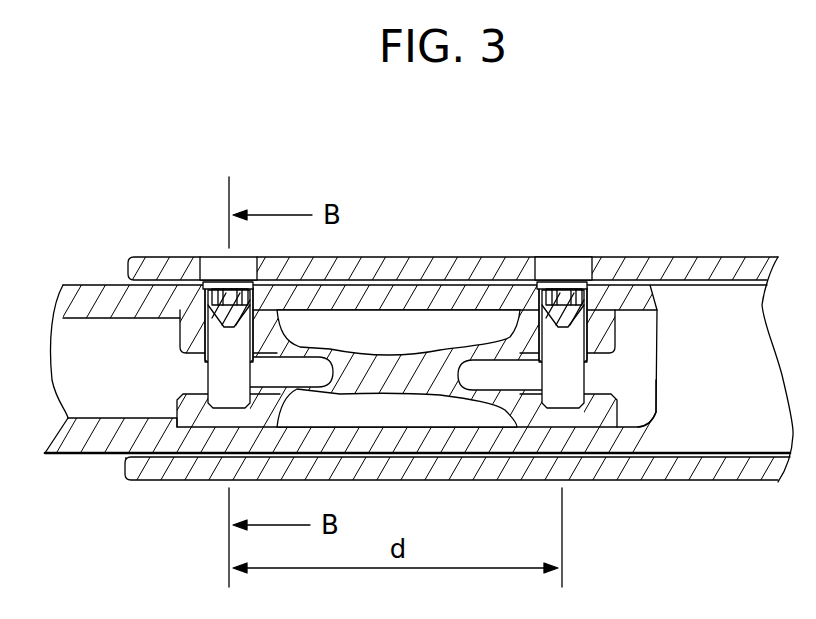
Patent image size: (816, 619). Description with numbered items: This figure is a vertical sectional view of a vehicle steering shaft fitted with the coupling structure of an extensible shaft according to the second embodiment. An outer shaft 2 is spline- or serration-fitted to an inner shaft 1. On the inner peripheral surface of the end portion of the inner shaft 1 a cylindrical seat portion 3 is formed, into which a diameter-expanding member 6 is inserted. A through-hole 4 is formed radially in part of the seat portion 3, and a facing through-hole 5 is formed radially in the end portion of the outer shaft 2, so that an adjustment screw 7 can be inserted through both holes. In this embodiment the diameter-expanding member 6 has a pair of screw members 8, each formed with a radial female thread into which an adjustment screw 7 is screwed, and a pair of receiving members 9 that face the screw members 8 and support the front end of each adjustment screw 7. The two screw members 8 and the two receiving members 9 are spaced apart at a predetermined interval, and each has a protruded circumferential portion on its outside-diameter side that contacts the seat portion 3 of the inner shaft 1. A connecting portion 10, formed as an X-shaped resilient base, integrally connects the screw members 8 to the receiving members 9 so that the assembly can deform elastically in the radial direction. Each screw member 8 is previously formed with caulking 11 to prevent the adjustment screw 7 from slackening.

The inner shaft 1 is at (92, 445).
The outer shaft 2 is at (735, 268).
The cylindrical seat portion 3 is at (650, 418).
The through-hole 4 is at (203, 284).
The through-hole 5 is at (228, 268).
The diameter-expanding member 6 is at (637, 345).
The adjustment screw 7 is at (218, 377).
The screw member 8 is at (182, 332).
The receiving member 9 is at (187, 407).
The connecting portion 10 is at (416, 358).
The caulking 11 is at (205, 361).